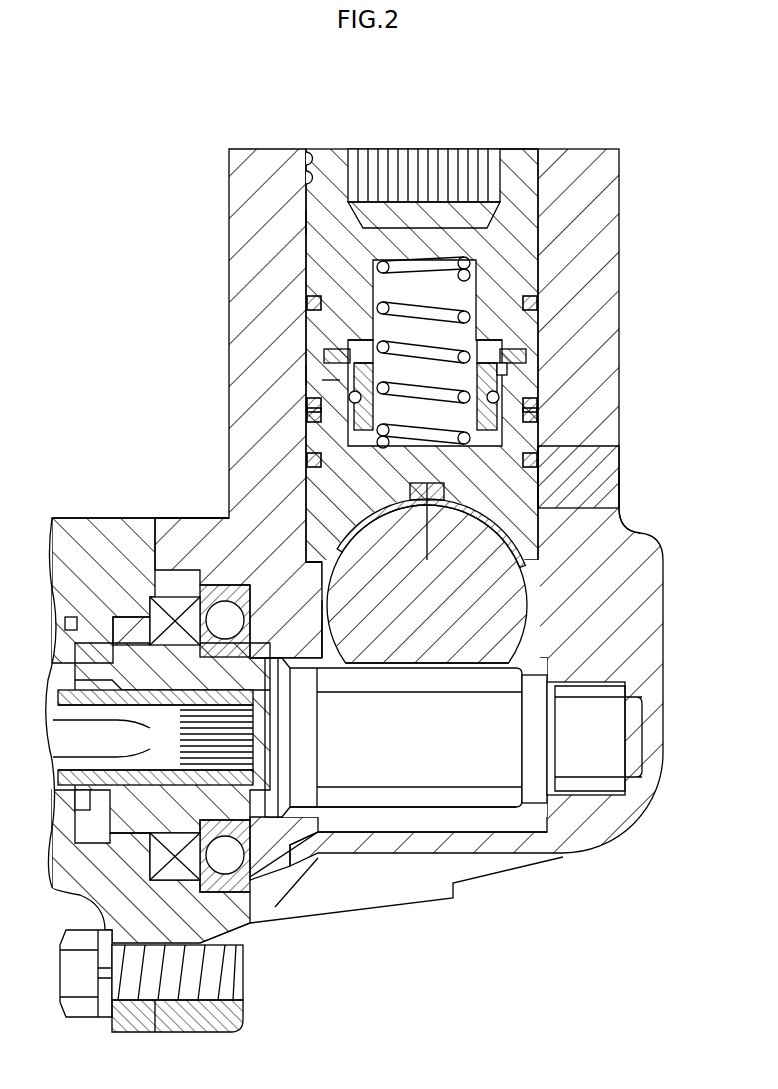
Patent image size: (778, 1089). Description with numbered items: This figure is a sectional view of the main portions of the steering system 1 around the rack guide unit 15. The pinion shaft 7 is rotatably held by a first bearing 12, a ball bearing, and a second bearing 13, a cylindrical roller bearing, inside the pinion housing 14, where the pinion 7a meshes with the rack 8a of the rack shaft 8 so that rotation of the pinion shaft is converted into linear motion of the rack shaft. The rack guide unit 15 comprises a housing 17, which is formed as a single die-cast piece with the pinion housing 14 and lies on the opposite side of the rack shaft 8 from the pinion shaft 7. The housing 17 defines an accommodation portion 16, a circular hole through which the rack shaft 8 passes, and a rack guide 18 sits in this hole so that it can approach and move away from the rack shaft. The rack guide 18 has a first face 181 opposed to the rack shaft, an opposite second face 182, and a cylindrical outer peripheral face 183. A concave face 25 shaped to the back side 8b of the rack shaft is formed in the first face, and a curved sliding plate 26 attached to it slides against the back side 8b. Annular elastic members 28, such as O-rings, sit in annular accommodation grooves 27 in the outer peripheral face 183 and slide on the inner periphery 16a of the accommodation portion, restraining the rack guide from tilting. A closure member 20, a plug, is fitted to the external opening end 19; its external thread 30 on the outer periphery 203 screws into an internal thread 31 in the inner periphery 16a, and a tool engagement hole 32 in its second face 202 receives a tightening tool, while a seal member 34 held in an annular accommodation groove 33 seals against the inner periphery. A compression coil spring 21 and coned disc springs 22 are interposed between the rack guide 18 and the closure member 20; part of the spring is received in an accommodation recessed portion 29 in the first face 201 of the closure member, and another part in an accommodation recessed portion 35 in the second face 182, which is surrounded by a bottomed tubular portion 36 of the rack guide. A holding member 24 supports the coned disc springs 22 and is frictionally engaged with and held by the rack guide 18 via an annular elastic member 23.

The steering system 1 is at (384, 546).
The pinion shaft 7 is at (406, 806).
The pinion 7a is at (427, 810).
The rack shaft 8 is at (443, 645).
The rack 8a is at (463, 680).
The back side 8b is at (300, 622).
The first bearing 12 is at (230, 865).
The second bearing 13 is at (597, 790).
The pinion housing 14 is at (498, 846).
The rack guide unit 15 is at (472, 130).
The accommodation portion 16 is at (535, 576).
The inner periphery 16a is at (626, 531).
The housing 17 is at (623, 486).
The rack guide 18 is at (545, 508).
The external opening end 19 is at (352, 326).
The closure member 20 is at (545, 192).
The compression coil spring 21 is at (480, 332).
The coned disc spring 22 is at (520, 356).
The annular elastic member 23 is at (538, 404).
The holding member 24 is at (505, 372).
The concave face 25 is at (362, 520).
The sliding plate 26 is at (400, 505).
The annular accommodation groove 27 is at (314, 414).
The annular elastic member 28 is at (537, 416).
The accommodation recessed portion 29 is at (415, 352).
The external thread 30 is at (306, 188).
The internal thread 31 is at (308, 159).
The tool engagement hole 32 is at (425, 215).
The annular accommodation groove 33 is at (310, 303).
The seal member 34 is at (537, 303).
The accommodation recessed portion 35 is at (312, 460).
The tubular portion 36 is at (318, 390).
The first face 181 is at (300, 560).
The second face 182 is at (316, 376).
The outer peripheral face 183 is at (542, 474).
The first face 201 is at (325, 356).
The second face 202 is at (515, 150).
The outer periphery 203 is at (306, 222).